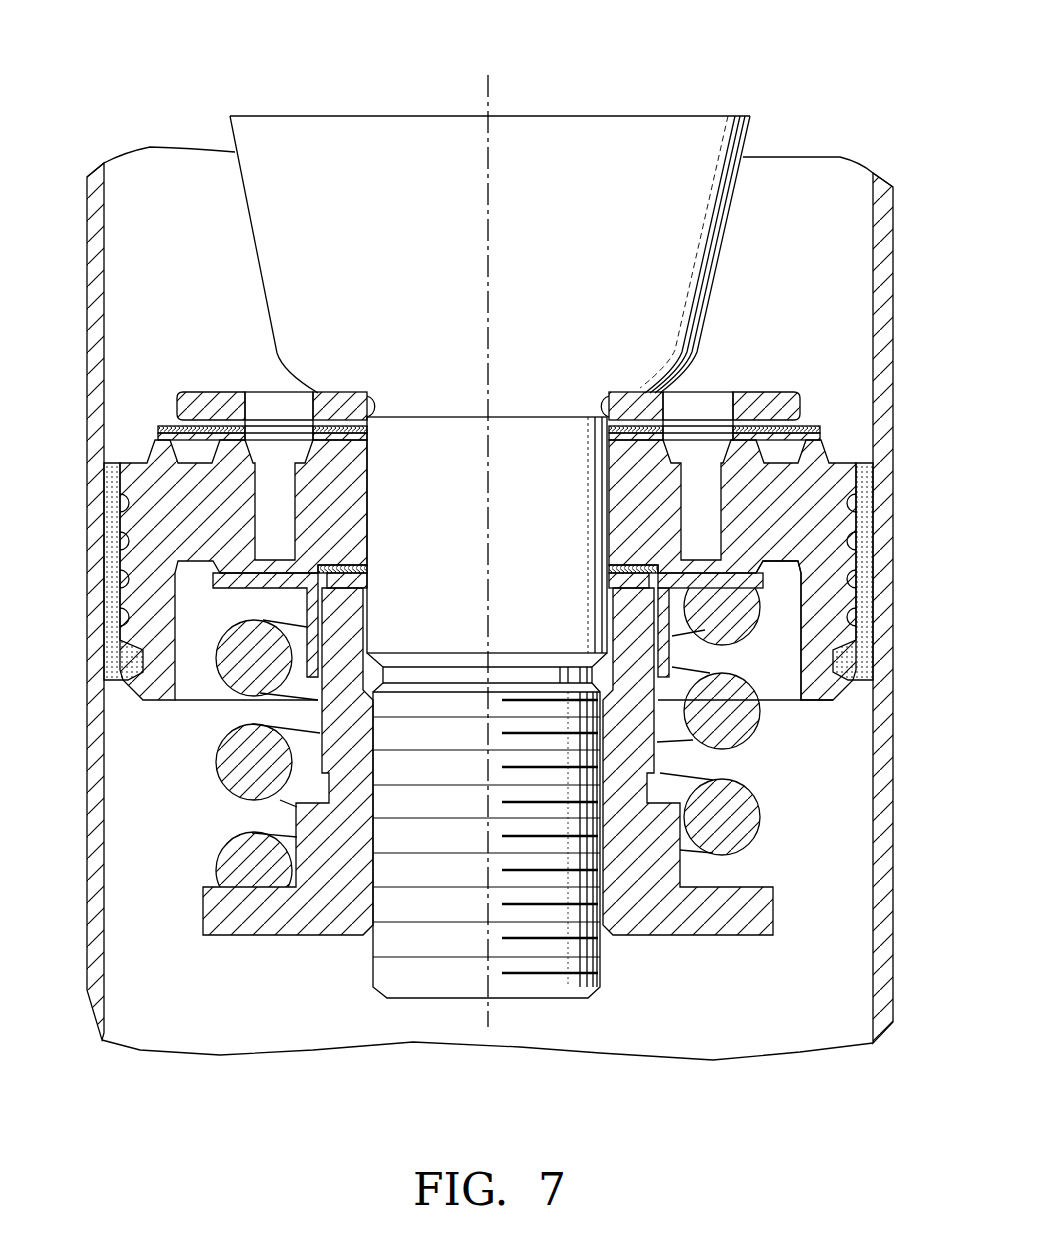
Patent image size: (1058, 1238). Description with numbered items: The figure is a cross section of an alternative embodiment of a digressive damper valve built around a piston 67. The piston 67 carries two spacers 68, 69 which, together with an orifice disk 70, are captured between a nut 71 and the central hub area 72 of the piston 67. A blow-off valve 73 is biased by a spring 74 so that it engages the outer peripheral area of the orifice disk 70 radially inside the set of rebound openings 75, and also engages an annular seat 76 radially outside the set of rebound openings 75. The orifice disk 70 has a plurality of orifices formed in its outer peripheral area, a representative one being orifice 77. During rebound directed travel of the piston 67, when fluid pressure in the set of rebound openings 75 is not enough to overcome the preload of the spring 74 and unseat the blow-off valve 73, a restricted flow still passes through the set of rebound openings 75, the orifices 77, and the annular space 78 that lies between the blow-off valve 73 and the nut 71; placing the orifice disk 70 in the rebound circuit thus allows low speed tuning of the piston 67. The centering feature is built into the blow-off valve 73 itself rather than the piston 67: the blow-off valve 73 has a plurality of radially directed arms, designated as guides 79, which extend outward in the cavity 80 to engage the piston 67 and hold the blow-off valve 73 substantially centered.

The piston 67 is at (846, 458).
The spacer 68 is at (370, 573).
The spacer 69 is at (372, 582).
The orifice disk 70 is at (370, 567).
The nut 71 is at (683, 917).
The central hub area 72 is at (633, 563).
The blow-off valve 73 is at (663, 655).
The spring 74 is at (735, 833).
The set of rebound openings 75 is at (255, 533).
The annular seat 76 is at (747, 570).
The orifice 77 is at (667, 570).
The annular space 78 is at (318, 660).
The guides 79 is at (788, 592).
The cavity 80 is at (800, 687).